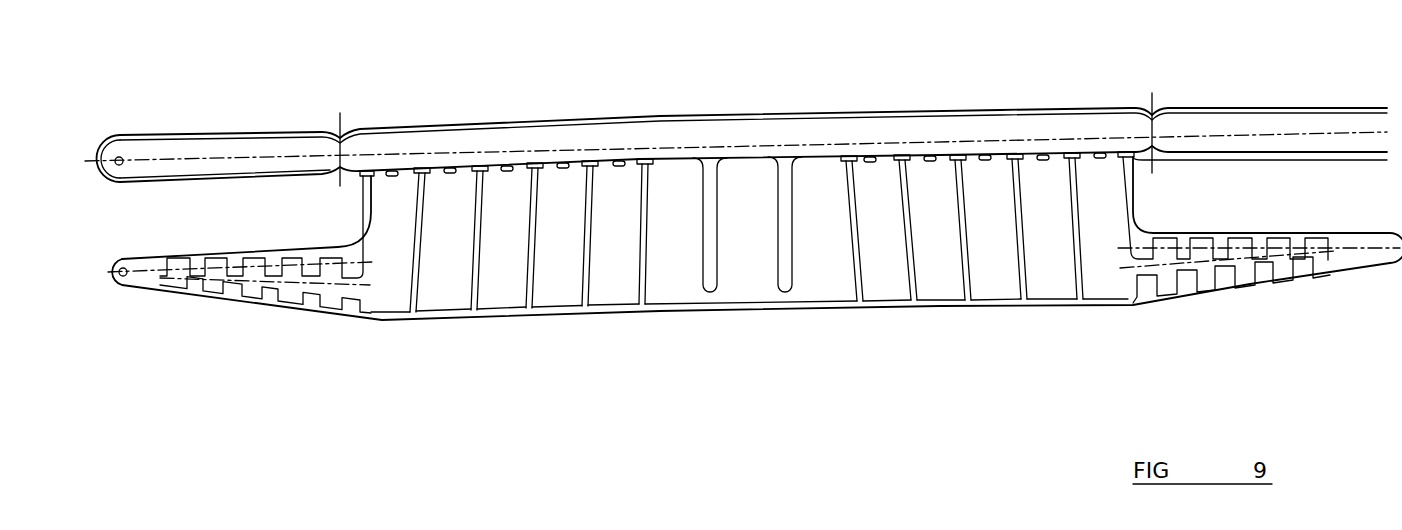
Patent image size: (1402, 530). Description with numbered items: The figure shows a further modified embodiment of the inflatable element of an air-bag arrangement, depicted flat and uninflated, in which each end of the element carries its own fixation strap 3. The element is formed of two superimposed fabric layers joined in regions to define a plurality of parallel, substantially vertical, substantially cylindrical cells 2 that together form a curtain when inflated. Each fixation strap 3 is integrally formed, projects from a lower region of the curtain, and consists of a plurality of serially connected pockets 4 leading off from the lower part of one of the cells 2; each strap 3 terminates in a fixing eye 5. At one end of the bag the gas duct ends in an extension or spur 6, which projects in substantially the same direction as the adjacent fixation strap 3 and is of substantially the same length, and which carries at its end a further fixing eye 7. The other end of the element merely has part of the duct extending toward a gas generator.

The cells 2 is at (443, 298).
The fixation strap 3 is at (265, 316).
The pockets 4 is at (216, 257).
The fixing eye 5 is at (125, 278).
The spur 6 is at (236, 148).
The further fixing eye 7 is at (119, 157).